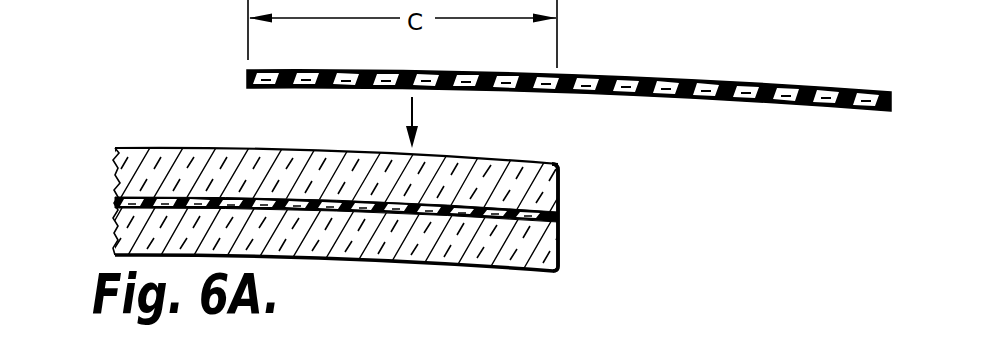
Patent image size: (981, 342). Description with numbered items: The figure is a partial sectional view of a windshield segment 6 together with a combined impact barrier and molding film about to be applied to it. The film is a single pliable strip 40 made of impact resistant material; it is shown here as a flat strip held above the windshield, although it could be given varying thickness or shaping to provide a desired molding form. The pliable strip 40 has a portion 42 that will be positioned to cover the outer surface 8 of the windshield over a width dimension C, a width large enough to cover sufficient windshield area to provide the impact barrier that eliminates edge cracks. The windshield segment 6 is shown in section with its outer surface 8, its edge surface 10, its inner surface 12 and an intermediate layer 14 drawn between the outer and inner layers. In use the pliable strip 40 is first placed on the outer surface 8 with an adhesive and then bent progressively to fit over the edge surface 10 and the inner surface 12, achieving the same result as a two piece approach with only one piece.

The windshield segment 6 is at (341, 179).
The outer surface 8 is at (115, 178).
The edge surface 10 is at (560, 195).
The inner surface 12 is at (118, 235).
The intermediate film layer 14 is at (115, 210).
The pliable strip 40 is at (569, 73).
The portion 42 is at (345, 70).